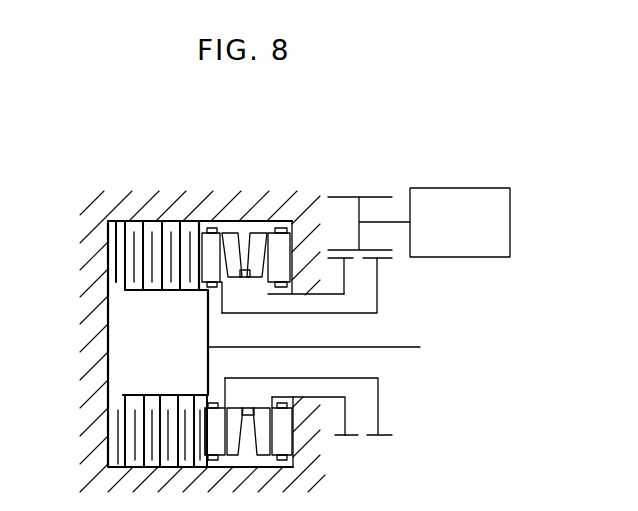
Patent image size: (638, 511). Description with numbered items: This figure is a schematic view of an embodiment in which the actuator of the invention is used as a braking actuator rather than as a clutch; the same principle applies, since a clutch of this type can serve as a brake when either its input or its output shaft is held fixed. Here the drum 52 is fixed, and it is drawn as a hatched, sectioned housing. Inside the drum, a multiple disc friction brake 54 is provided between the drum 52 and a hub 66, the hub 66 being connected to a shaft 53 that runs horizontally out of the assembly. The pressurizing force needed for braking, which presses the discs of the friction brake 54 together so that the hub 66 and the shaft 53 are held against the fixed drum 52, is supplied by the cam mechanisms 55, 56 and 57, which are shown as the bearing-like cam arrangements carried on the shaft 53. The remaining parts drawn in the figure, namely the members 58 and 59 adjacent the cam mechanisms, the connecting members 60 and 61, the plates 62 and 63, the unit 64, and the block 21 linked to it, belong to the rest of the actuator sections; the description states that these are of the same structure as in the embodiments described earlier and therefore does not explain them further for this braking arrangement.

The control unit 21 is at (463, 215).
The drum 52 is at (135, 200).
The shaft 53 is at (405, 345).
The multiple disc friction brake 54 is at (153, 291).
The cam mechanism 55 is at (243, 247).
The cam mechanism 56 is at (212, 228).
The cam mechanism 57 is at (279, 248).
The rotor segment 58 is at (229, 278).
The rotor segment 59 is at (264, 277).
The connecting member 60 is at (350, 311).
The connecting member 61 is at (330, 397).
The clutch plate 62 is at (341, 437).
The clutch plate 63 is at (386, 437).
The electromagnetic clutch 64 is at (370, 197).
The coil 66 is at (187, 293).